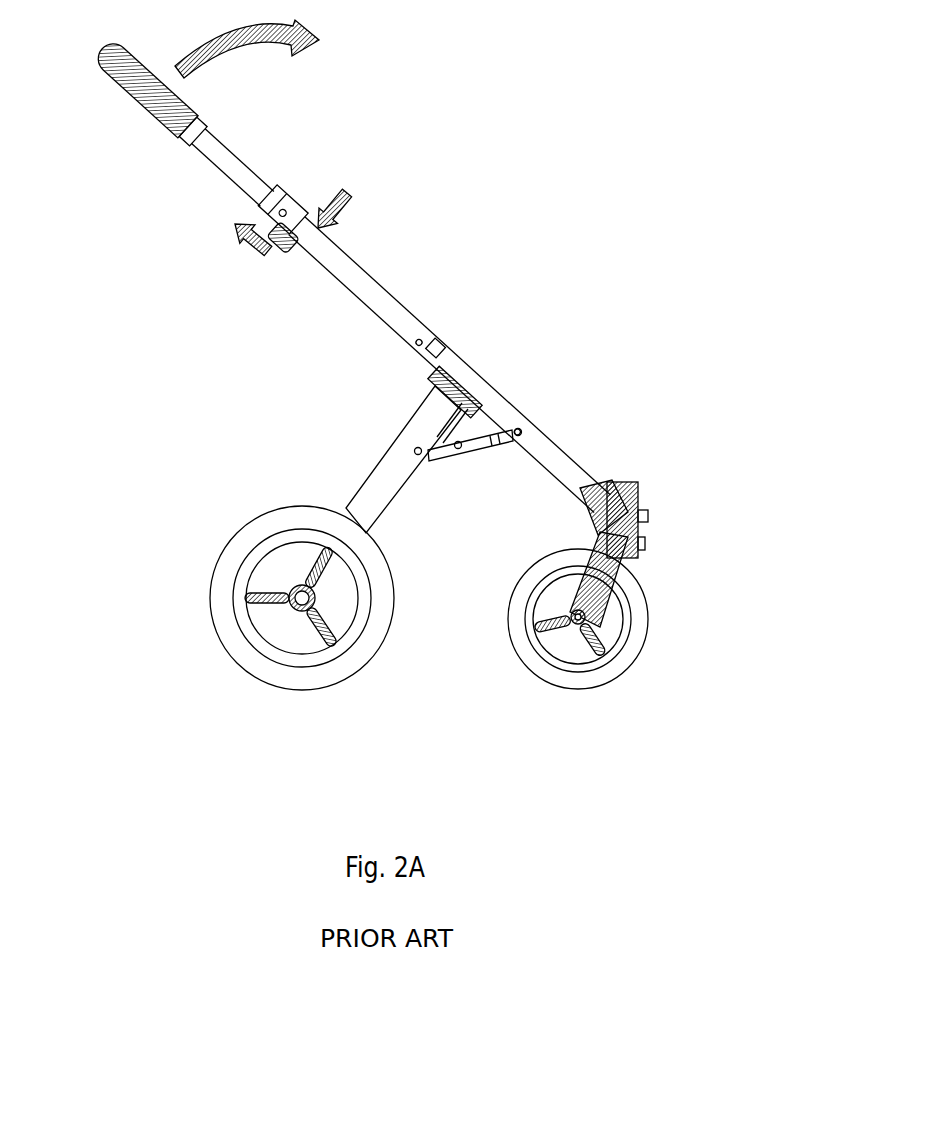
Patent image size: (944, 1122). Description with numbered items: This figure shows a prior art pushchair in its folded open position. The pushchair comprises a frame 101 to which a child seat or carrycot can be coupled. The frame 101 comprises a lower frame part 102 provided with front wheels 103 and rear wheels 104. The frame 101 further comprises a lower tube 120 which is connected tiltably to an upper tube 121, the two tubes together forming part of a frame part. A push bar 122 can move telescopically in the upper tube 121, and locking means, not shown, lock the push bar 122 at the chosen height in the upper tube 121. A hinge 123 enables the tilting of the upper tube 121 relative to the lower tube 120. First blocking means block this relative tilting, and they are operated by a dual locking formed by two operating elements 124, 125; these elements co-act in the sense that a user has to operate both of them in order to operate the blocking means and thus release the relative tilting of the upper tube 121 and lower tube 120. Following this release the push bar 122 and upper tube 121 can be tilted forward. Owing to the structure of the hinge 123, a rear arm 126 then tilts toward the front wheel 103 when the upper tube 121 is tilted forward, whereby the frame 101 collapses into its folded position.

The frame 101 is at (418, 133).
The lower frame part 102 is at (607, 378).
The front wheels 103 is at (625, 712).
The rear wheels 104 is at (247, 712).
The lower tube 120 is at (532, 397).
The upper tube 121 is at (428, 267).
The push bar 122 is at (188, 192).
The hinge 123 is at (385, 380).
The operating element 124 is at (313, 188).
The operating element 125 is at (275, 257).
The rear arm 126 is at (313, 472).